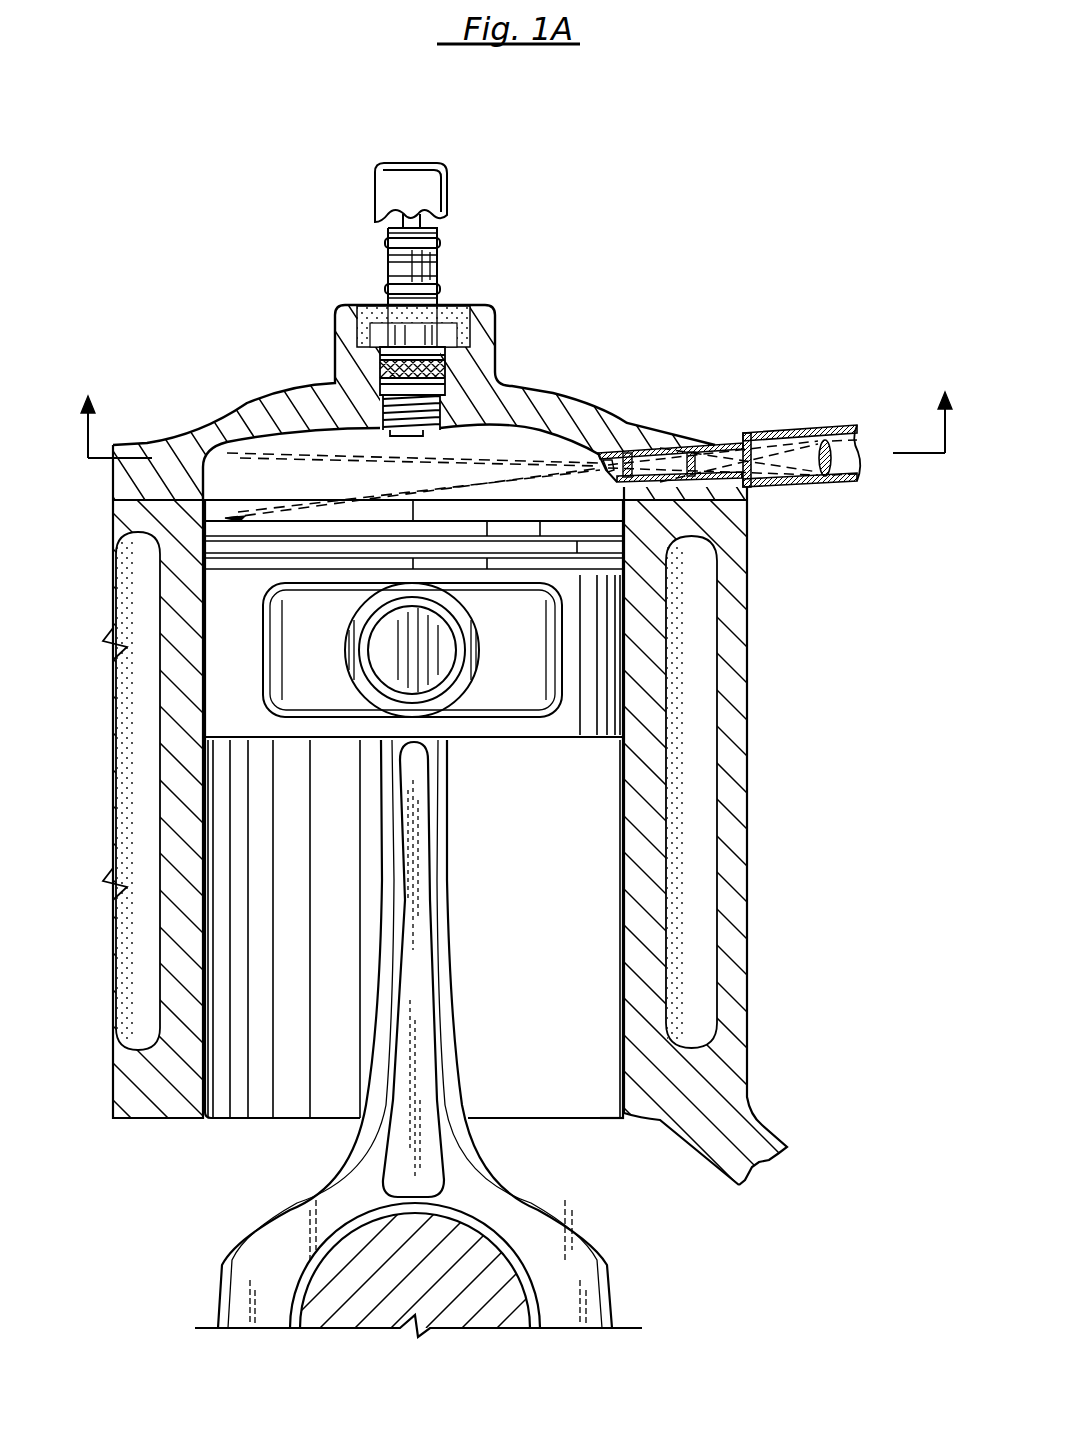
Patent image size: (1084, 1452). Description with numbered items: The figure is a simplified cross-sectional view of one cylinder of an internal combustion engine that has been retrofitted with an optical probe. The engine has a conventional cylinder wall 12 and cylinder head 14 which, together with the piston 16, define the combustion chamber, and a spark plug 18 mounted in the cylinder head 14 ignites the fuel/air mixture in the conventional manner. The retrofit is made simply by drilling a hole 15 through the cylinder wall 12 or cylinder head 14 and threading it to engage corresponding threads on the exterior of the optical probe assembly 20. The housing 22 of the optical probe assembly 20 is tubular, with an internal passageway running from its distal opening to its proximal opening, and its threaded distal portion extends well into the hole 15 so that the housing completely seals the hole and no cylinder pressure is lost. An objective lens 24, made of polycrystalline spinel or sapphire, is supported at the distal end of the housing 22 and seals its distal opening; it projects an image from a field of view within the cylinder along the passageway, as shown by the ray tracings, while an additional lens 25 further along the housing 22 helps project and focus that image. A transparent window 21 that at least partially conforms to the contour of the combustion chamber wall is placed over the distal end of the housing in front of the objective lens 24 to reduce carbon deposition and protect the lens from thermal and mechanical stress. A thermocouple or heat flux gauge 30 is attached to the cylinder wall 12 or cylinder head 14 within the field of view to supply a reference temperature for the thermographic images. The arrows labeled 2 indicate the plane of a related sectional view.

The section line 2- 2 is at (515, 446).
The cylinder wall 12 is at (188, 578).
The cylinder head 14 is at (300, 428).
The hole 15 is at (623, 455).
The piston 16 is at (238, 690).
The spark plug 18 is at (440, 272).
The optical probe assembly 20 is at (707, 383).
The transparent window 21 is at (607, 457).
The optical probe housing 22 is at (775, 488).
The objective lens 24 is at (670, 452).
The additional lens 25 is at (823, 490).
The thermocouple or heat flux gauge 30 is at (200, 487).